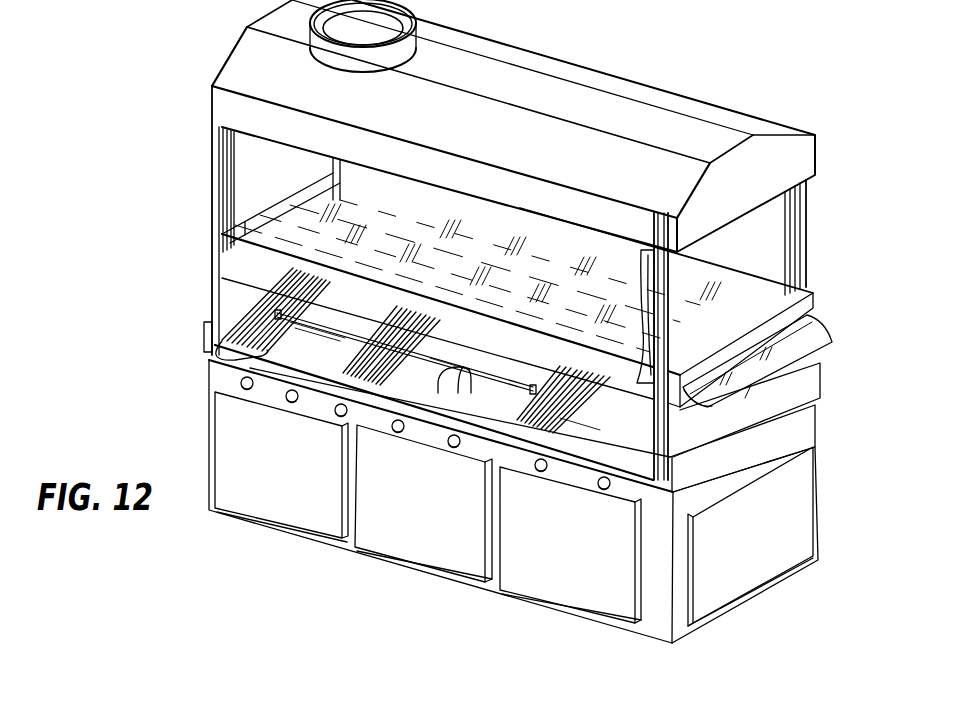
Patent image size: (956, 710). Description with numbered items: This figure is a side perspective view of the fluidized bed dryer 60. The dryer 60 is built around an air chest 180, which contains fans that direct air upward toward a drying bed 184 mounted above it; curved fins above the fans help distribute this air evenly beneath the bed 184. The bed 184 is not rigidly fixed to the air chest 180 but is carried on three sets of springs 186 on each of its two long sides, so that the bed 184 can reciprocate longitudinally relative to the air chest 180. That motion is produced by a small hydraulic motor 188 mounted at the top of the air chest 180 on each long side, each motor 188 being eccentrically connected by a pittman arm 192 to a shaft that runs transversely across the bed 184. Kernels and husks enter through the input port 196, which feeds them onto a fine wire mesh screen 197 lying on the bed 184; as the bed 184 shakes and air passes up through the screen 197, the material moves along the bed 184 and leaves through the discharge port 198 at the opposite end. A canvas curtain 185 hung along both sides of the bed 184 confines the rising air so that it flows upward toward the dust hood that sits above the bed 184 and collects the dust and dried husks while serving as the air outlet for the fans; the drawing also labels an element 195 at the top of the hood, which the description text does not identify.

The fluidized bed dryer 60 is at (110, 293).
The air chest 180 is at (188, 500).
The drying bed 184 is at (237, 263).
The canvas curtain 185 is at (225, 178).
The springs 186 is at (205, 360).
The hydraulic motor 188 is at (440, 377).
The pittman arm 192 is at (538, 374).
The exhaust vent collar 195 is at (420, 30).
The input port 196 is at (797, 330).
The fine wire mesh screen 197 is at (366, 240).
The discharge port 198 is at (285, 213).